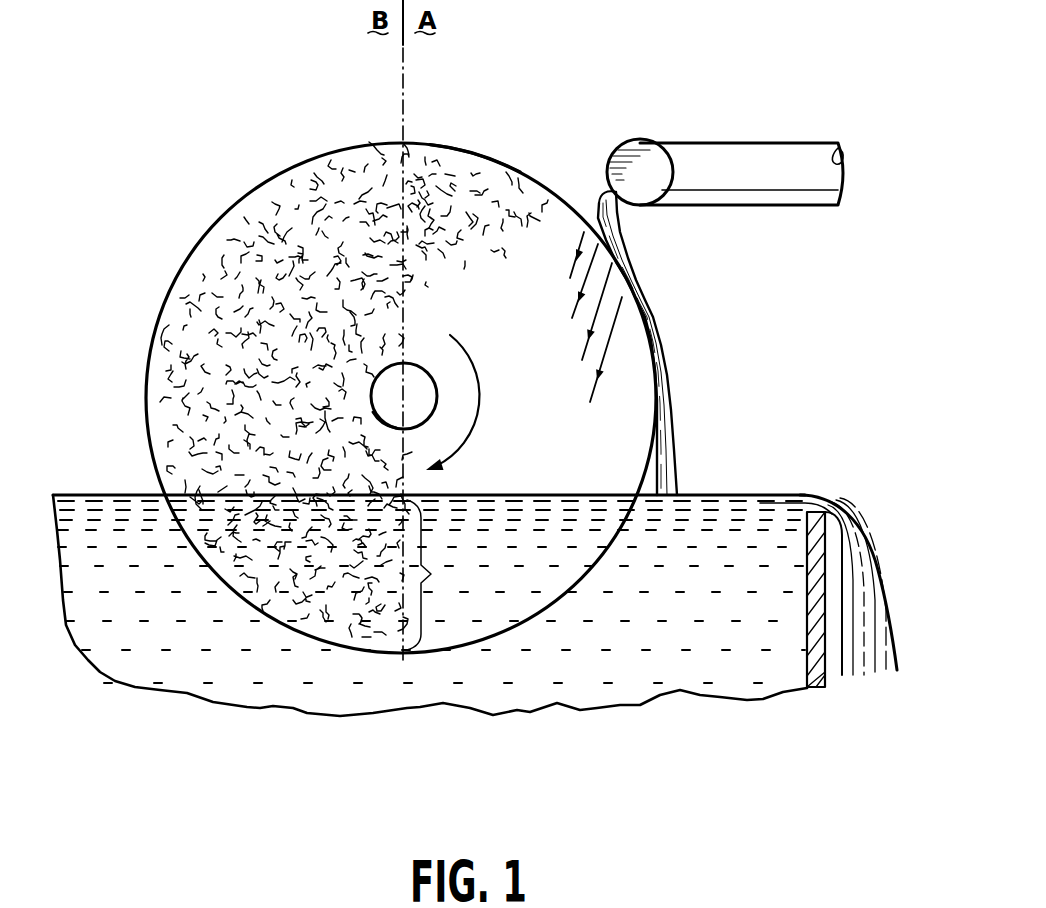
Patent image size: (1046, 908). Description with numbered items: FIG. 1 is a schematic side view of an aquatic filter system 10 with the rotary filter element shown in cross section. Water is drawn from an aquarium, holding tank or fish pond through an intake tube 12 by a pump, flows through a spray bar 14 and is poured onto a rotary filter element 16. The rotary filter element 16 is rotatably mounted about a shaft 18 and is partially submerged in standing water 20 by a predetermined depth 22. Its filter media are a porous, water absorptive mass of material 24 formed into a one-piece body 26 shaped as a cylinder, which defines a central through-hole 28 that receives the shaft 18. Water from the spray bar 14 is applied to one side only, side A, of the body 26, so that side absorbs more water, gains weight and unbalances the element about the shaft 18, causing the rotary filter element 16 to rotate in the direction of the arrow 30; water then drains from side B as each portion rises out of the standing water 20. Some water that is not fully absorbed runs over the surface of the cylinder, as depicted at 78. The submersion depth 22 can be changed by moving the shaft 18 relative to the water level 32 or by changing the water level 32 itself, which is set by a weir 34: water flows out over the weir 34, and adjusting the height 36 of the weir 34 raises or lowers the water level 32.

The aquatic filter system 10 is at (219, 128).
The intake tube 12 is at (776, 148).
The spray bar 14 is at (633, 142).
The rotary filter element 16 is at (345, 140).
The shaft 18 is at (414, 372).
The standing water 20 is at (122, 520).
The predetermined depth 22 is at (433, 574).
The porous, water absorptive mass of material 24 is at (202, 272).
The one-piece body 26 is at (474, 164).
The central through-hole 28 is at (378, 419).
The arrow 30 is at (477, 427).
The water level 32 is at (725, 494).
The weir 34 is at (810, 600).
The height 36 is at (821, 507).
The water running over the surface of the cylinder 78 is at (673, 432).